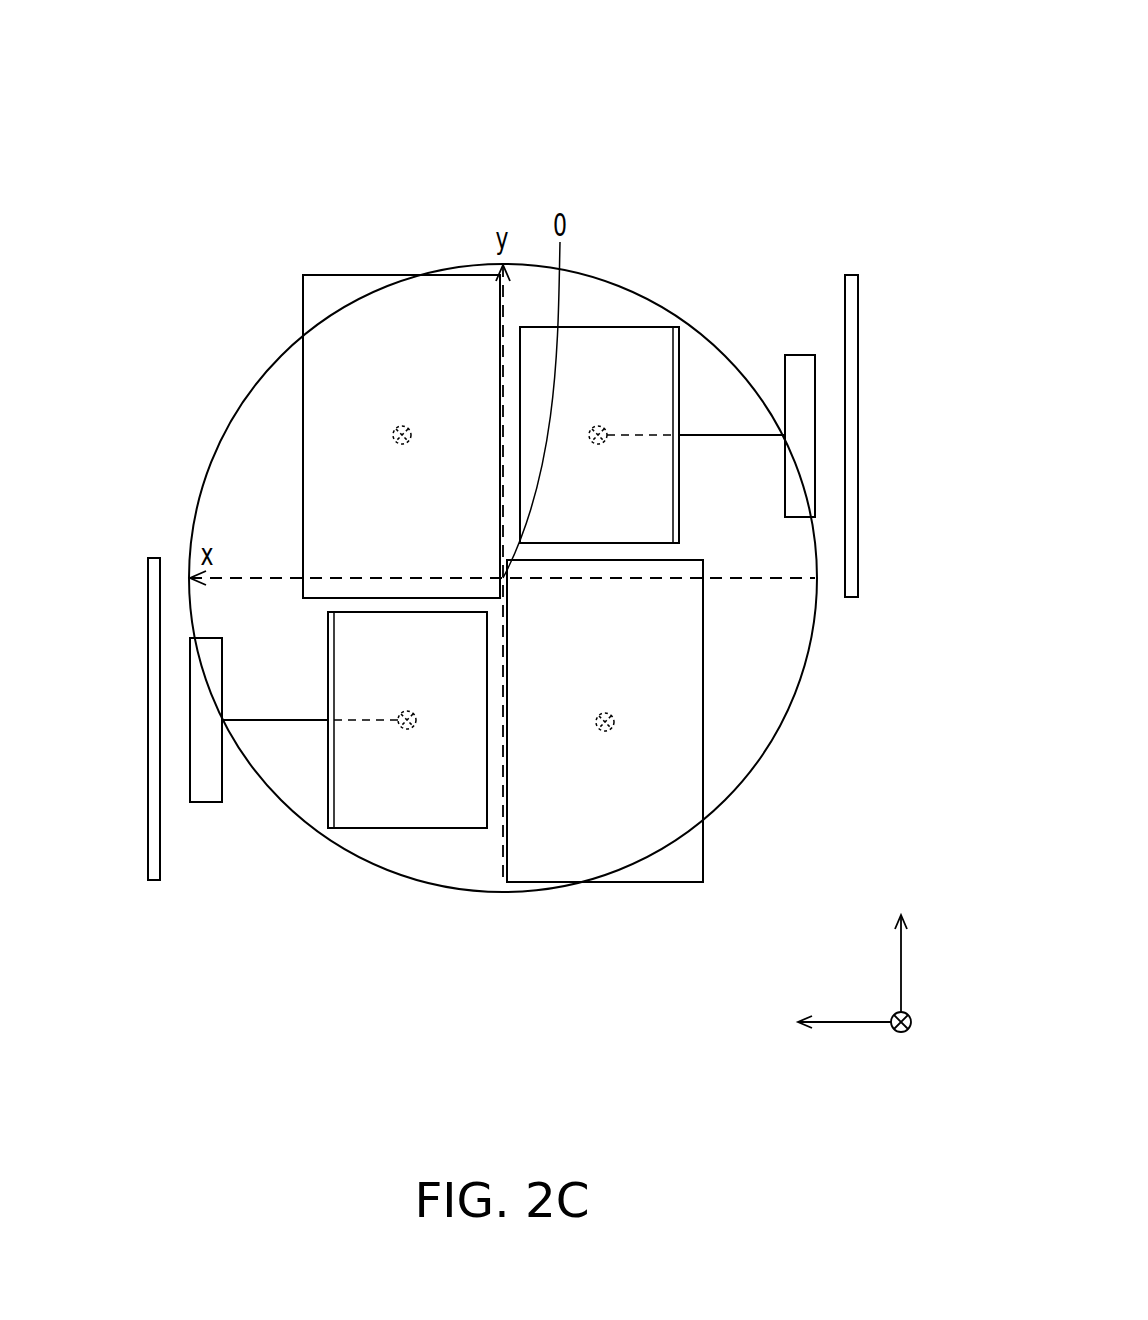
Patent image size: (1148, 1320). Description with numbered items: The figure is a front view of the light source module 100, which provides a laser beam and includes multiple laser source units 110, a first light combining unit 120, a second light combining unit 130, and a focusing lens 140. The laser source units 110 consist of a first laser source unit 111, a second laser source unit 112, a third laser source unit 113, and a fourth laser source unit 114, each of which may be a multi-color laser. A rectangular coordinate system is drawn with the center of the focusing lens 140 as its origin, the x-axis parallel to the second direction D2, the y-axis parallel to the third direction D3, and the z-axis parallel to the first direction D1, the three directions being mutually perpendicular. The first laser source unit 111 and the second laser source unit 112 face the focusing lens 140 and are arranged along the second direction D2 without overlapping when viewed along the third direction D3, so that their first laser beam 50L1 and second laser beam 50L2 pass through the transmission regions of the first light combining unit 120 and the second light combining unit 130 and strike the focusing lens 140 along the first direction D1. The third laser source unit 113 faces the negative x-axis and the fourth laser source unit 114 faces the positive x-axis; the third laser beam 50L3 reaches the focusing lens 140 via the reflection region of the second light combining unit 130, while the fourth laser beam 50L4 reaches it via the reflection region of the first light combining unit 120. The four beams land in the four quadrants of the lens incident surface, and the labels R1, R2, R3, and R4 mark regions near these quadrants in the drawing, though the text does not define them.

The light source module 100 is at (183, 1025).
The laser source units 110 is at (122, 23).
The first laser source unit 111 is at (643, 850).
The second laser source unit 112 is at (351, 300).
The third laser source unit 113 is at (155, 573).
The fourth laser source unit 114 is at (852, 290).
The first light combining unit 120 is at (625, 350).
The second light combining unit 130 is at (387, 797).
The focusing lens 140 is at (772, 643).
The first laser beam 50L1 is at (598, 713).
The second laser beam 50L2 is at (393, 432).
The third laser beam 50L3 is at (282, 718).
The fourth laser beam 50L4 is at (728, 440).
The first rotation direction R1 is at (742, 705).
The second rotation direction R2 is at (252, 472).
The third rotation direction R3 is at (307, 755).
The fourth rotation direction R4 is at (713, 400).
The first direction D1 is at (930, 1051).
The second direction D2 is at (775, 1023).
The third direction D3 is at (900, 896).